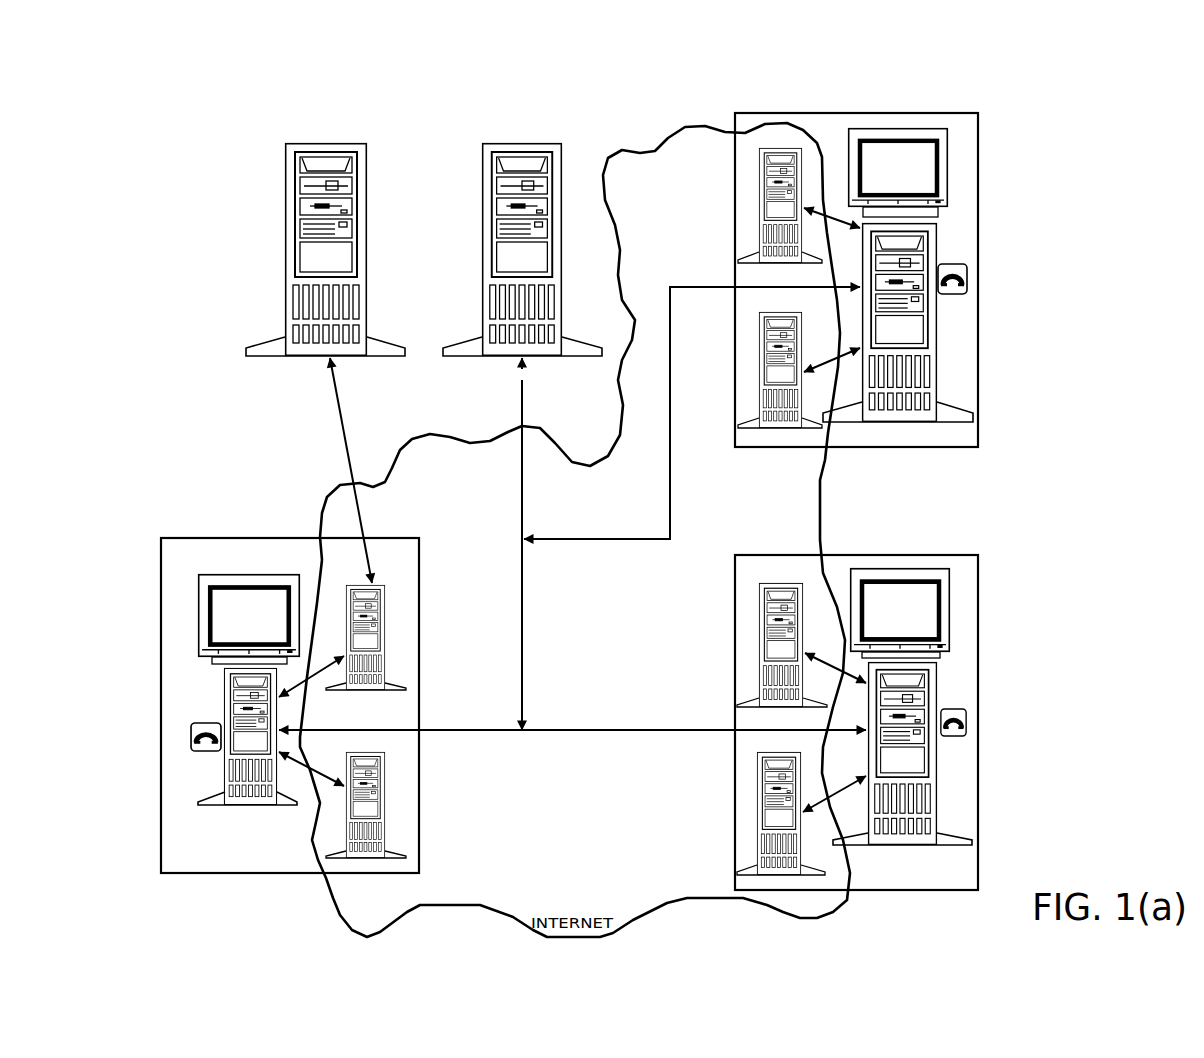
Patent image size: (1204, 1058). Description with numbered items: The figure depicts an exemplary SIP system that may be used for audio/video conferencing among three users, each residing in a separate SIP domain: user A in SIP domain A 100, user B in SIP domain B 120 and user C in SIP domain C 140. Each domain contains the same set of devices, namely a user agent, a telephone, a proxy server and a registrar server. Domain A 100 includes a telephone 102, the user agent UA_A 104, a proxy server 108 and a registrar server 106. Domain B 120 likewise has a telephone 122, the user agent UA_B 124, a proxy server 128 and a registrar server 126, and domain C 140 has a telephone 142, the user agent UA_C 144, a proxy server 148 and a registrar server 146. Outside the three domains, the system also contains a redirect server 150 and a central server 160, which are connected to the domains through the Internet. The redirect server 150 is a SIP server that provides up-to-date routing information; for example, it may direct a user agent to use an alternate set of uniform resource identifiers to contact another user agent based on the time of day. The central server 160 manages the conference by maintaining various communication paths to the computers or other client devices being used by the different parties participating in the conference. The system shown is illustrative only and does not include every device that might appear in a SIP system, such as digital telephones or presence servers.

The SIP domain A 100 is at (252, 542).
The telephone 102 is at (191, 722).
The user agent UA_A 104 is at (228, 806).
The registrar server 106 is at (395, 851).
The proxy server 108 is at (395, 683).
The SIP domain B 120 is at (860, 115).
The telephone 122 is at (968, 280).
The user agent UA_B 124 is at (932, 365).
The registrar server 126 is at (757, 397).
The proxy server 128 is at (757, 195).
The SIP domain C 140 is at (822, 548).
The telephone 142 is at (962, 708).
The user agent UA_C 144 is at (932, 790).
The registrar server 146 is at (752, 865).
The proxy server 148 is at (757, 658).
The redirect server 150 is at (308, 145).
The central server 160 is at (510, 145).